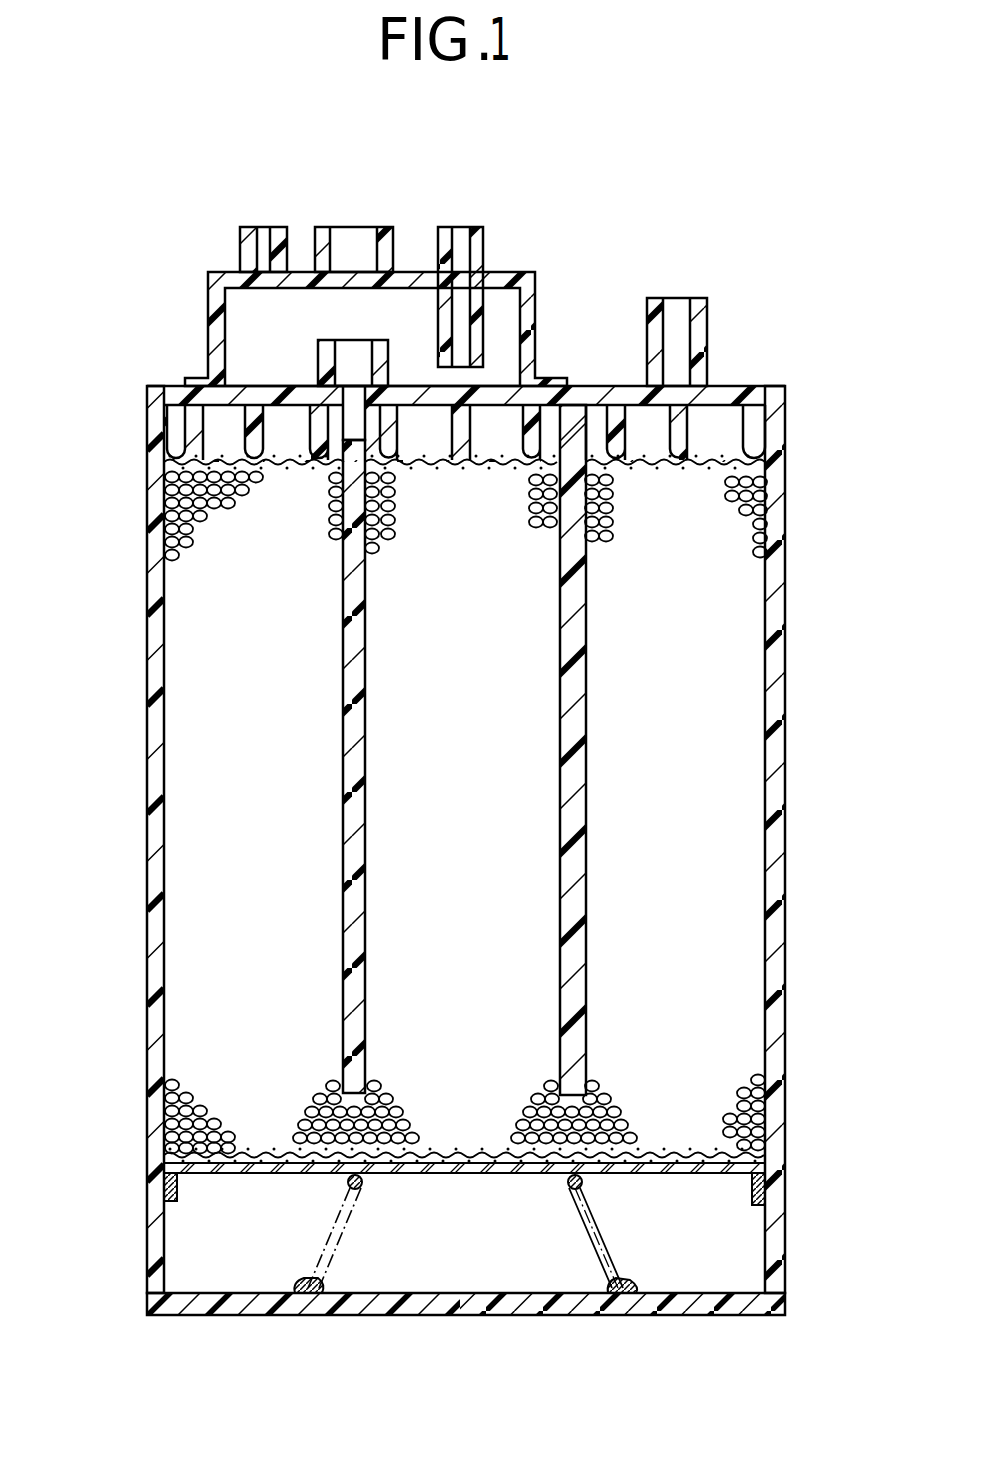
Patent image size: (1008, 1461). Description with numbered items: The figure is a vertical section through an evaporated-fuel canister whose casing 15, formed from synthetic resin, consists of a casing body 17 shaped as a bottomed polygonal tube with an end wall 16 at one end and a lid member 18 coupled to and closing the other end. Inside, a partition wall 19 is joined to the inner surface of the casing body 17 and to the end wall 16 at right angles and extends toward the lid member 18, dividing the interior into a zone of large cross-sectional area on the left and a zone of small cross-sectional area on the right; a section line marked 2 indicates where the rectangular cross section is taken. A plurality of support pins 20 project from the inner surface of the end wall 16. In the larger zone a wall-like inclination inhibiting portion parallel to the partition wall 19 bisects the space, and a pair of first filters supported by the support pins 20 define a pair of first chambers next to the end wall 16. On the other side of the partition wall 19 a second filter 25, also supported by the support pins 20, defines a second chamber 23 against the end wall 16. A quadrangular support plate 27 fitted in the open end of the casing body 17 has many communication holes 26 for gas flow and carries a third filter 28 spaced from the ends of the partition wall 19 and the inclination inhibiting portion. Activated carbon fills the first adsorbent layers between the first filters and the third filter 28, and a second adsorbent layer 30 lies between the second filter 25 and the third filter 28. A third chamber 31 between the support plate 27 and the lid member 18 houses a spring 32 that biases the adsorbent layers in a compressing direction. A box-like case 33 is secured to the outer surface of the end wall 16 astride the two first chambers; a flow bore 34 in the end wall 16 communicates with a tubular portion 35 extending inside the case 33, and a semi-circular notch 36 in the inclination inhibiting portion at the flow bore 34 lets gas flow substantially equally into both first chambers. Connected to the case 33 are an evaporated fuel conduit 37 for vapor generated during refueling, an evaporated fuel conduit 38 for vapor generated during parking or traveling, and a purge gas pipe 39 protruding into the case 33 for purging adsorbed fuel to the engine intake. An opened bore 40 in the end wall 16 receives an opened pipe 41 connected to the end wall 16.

The section line 2- 2 is at (98, 468).
The casing 15 is at (787, 779).
The end wall 16 is at (593, 404).
The casing body 17 is at (785, 696).
The lid member 18 is at (445, 1306).
The partition wall 19 is at (578, 770).
The support pins 20 is at (457, 467).
The second chamber 23 is at (723, 430).
The second filter 25 is at (716, 470).
The communication holes 26 is at (455, 1160).
The support plate 27 is at (486, 1175).
The third filter 28 is at (275, 1150).
The second adsorbent layer 30 is at (688, 861).
The third chamber 31 is at (684, 1255).
The spring 32 is at (310, 1281).
The case 33 is at (215, 296).
The flow bore 34 is at (357, 386).
The tubular portion 35 is at (360, 383).
The semi-circular notch 36 is at (362, 432).
The evaporated fuel conduit 37 is at (320, 247).
The evaporated fuel conduit 38 is at (240, 252).
The purge gas pipe 39 is at (484, 250).
The opened bore 40 is at (673, 402).
The opened pipe 41 is at (707, 310).